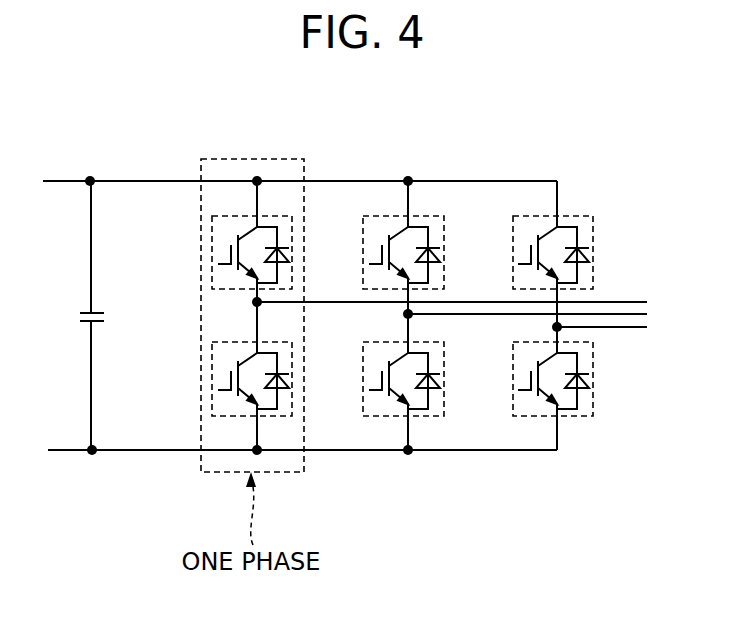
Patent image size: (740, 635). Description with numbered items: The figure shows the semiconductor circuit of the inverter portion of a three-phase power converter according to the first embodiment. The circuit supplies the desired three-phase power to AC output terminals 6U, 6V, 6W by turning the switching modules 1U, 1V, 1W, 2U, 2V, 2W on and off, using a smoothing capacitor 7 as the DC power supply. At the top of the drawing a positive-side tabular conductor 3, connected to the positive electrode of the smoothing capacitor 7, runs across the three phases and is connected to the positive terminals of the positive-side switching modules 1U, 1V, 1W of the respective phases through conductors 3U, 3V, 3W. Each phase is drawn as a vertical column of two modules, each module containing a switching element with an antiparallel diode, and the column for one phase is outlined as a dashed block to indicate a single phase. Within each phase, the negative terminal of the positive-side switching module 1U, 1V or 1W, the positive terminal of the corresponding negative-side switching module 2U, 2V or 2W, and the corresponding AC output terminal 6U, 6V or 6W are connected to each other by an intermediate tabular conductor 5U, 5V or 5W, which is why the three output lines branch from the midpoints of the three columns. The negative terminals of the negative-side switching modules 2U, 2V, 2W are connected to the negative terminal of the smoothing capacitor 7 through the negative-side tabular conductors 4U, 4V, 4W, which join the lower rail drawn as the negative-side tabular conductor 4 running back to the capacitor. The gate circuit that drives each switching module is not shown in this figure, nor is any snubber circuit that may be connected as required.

The positive-side tabular conductor 3 is at (133, 181).
The negative-side tabular conductor 4 is at (132, 452).
The smoothing capacitor 7 is at (82, 318).
The positive-side switching module 1U is at (235, 216).
The positive-side switching module 1V is at (386, 216).
The positive-side switching module 1W is at (535, 216).
The negative-side switching module 2U is at (237, 418).
The negative-side switching module 2V is at (388, 418).
The negative-side switching module 2W is at (537, 418).
The conductor 3U is at (259, 199).
The conductor 3V is at (410, 199).
The conductor 3W is at (559, 199).
The negative-side tabular conductor 4U is at (263, 456).
The negative-side tabular conductor 4V is at (409, 430).
The negative-side tabular conductor 4W is at (566, 430).
The intermediate tabular conductor 5U is at (256, 321).
The intermediate tabular conductor 5V is at (407, 325).
The intermediate tabular conductor 5W is at (556, 322).
The AC output terminal 6U is at (628, 301).
The AC output terminal 6V is at (633, 311).
The AC output terminal 6W is at (626, 329).